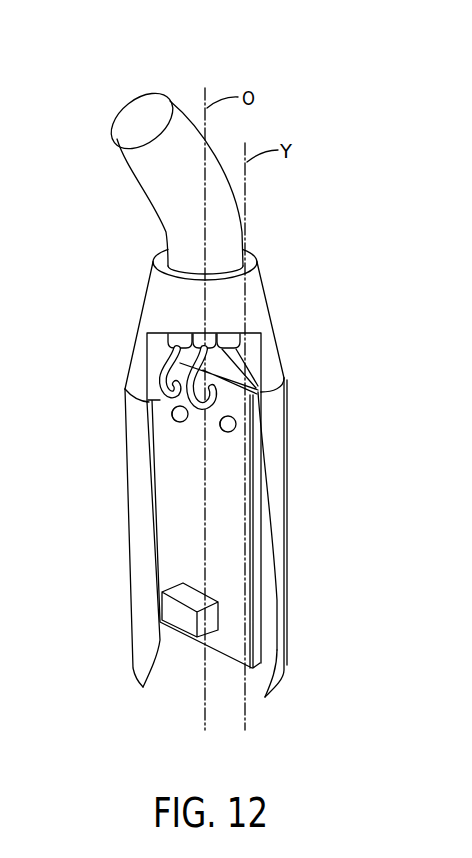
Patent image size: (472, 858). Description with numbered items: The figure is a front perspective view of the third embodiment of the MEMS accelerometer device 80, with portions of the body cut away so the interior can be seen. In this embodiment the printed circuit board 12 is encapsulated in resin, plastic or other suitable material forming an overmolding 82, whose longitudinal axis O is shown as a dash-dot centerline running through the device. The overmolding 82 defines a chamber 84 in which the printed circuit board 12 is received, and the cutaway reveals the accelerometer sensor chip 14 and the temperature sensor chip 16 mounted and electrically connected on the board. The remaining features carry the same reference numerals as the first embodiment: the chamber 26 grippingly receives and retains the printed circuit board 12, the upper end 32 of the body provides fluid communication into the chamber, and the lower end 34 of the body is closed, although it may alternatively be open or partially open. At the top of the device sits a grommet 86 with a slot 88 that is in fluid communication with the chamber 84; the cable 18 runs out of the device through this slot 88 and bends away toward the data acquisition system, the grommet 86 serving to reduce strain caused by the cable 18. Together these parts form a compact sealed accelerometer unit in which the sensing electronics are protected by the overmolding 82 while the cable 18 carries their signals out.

The MEMS accelerometer device 80 is at (297, 52).
The cable 18 is at (168, 184).
The grommet 86 is at (258, 322).
The slot 88 is at (283, 393).
The upper end 32 is at (273, 423).
The accelerometer sensor chip 14 is at (268, 532).
The chamber 26 is at (260, 578).
The chamber 84 is at (268, 600).
The lower end 34 is at (277, 673).
The overmolding 82 is at (140, 545).
The printed circuit board 12 is at (180, 458).
The temperature sensor chip 16 is at (185, 618).